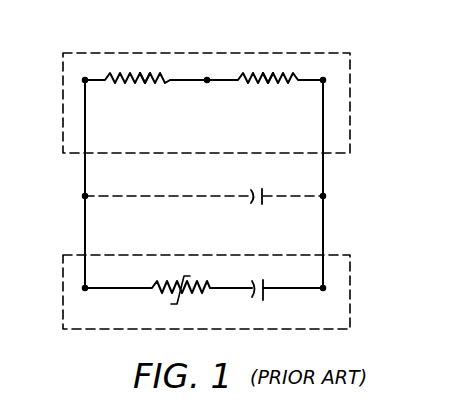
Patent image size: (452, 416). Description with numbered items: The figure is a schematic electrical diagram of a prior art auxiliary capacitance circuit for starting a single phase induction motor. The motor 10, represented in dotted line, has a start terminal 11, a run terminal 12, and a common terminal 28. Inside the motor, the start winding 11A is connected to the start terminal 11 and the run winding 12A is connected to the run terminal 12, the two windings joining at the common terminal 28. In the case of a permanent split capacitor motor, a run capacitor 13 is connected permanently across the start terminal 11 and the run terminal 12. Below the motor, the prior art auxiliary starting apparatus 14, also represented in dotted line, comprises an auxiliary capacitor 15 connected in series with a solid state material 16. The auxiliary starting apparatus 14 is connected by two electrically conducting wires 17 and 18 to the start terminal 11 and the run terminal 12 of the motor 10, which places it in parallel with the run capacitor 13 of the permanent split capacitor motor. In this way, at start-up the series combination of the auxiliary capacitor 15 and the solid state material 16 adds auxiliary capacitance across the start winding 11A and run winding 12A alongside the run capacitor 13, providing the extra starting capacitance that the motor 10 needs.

The motor 10 is at (353, 76).
The start terminal 11 is at (87, 80).
The start winding 11A is at (145, 82).
The run terminal 12 is at (323, 80).
The run winding 12A is at (266, 80).
The run capacitor 13 is at (256, 188).
The auxiliary starting apparatus 14 is at (352, 314).
The auxiliary capacitor 15 is at (265, 296).
The solid state material 16 is at (160, 290).
The electrically conducting wire 17 is at (85, 231).
The electrically conducting wire 18 is at (323, 208).
The common terminal 28 is at (207, 80).